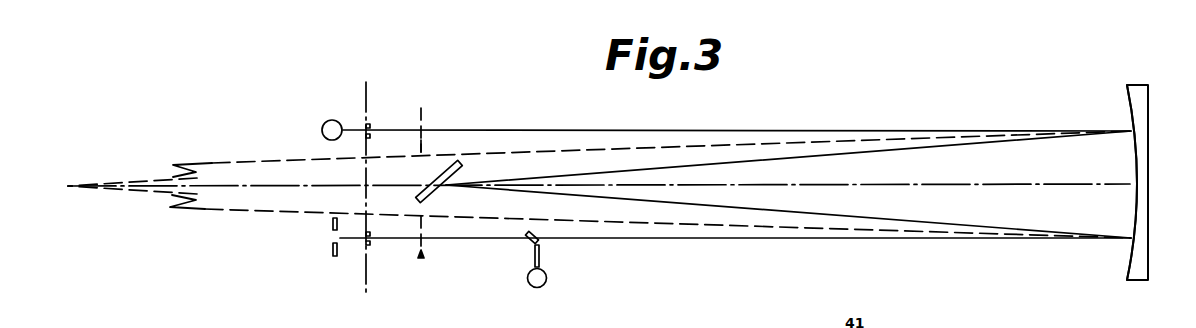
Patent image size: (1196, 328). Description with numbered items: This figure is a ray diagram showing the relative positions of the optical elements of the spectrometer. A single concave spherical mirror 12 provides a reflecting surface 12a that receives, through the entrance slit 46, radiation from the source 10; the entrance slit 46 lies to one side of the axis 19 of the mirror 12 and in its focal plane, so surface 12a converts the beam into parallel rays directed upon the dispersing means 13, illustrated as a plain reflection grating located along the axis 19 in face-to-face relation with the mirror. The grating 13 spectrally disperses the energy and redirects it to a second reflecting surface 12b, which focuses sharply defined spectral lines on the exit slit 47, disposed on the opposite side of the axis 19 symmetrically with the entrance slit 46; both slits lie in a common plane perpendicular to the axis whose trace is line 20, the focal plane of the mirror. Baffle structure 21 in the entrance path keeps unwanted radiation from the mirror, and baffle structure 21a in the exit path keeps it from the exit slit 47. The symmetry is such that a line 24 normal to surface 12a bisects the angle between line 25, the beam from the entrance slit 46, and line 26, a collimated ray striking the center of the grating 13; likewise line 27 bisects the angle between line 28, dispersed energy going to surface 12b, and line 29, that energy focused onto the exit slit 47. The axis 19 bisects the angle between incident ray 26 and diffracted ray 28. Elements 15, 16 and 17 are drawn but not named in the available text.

The source 10 is at (333, 250).
The concave spherical mirror 12 is at (1143, 104).
The reflecting surface 12a is at (1128, 243).
The second reflecting surface 12b is at (1132, 149).
The dispersing means 13 is at (462, 171).
The light source 15 is at (326, 121).
The detector 16 is at (547, 278).
The pickoff mirror 17 is at (527, 244).
The axis 19 is at (298, 185).
The focal plane 20 is at (367, 289).
The baffle structure 21 is at (424, 256).
The baffle structure 21a is at (421, 148).
The line normal to reflecting surface 24 is at (493, 221).
The line 25 is at (812, 240).
The line 26 is at (832, 215).
The line 27 is at (446, 157).
The line 28 is at (893, 150).
The line 29 is at (535, 129).
The entrance slit 46 is at (371, 246).
The exit slit 47 is at (371, 125).